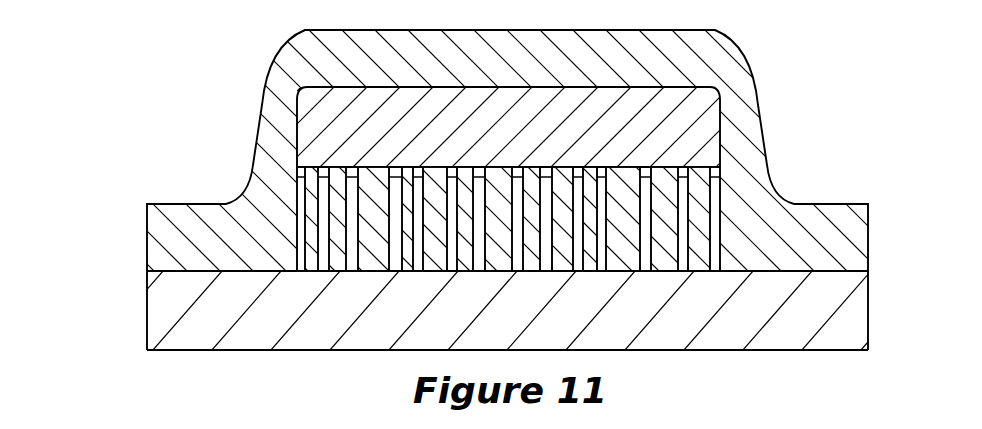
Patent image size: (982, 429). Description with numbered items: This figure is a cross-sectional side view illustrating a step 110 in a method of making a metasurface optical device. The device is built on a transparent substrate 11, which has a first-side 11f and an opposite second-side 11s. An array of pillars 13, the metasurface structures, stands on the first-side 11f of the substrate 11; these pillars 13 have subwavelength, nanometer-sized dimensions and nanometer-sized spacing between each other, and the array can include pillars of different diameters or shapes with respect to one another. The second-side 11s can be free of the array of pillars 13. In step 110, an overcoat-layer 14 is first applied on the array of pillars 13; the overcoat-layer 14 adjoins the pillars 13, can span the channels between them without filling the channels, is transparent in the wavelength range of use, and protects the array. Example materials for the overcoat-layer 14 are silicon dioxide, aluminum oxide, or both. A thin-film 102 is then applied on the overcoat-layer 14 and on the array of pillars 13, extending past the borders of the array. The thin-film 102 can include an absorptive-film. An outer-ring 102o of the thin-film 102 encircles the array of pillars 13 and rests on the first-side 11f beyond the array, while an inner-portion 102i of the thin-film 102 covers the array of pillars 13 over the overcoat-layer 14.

The step 110 is at (168, 47).
The thin-film 102 is at (737, 88).
The inner-portion 102i is at (535, 69).
The outer-ring 102o is at (235, 249).
The overcoat-layer 14 is at (512, 141).
The array of pillars 13 is at (636, 232).
The transparent substrate 11 is at (522, 323).
The first-side 11f is at (756, 274).
The second-side 11s is at (800, 348).